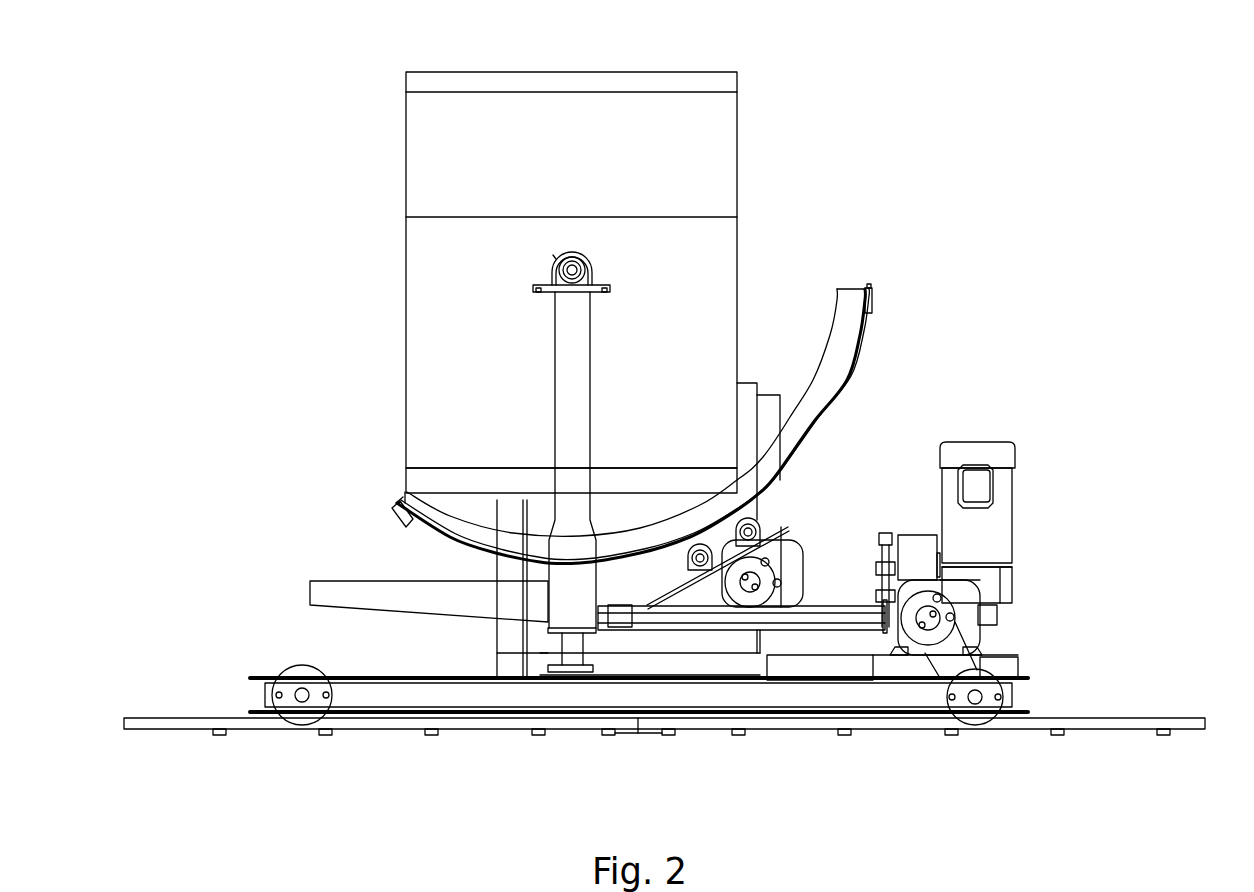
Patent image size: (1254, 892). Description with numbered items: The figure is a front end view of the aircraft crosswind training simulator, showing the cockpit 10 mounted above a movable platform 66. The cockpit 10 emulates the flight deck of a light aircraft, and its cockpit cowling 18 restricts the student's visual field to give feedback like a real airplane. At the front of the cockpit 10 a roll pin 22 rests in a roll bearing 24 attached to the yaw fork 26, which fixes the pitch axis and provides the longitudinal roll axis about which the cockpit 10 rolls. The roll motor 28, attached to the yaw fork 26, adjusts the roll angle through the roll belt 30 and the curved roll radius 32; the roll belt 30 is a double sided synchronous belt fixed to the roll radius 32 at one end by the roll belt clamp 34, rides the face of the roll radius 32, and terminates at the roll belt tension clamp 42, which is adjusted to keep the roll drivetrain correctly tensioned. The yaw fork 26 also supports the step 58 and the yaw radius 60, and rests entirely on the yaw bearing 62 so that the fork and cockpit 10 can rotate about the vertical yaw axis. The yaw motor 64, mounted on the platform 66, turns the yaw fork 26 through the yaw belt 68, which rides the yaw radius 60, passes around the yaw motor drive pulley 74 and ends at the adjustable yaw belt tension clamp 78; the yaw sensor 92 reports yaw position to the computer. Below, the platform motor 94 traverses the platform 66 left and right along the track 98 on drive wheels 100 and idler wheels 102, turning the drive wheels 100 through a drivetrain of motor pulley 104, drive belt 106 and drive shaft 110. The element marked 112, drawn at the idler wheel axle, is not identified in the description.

The cockpit 10 is at (532, 451).
The cockpit cowling 18 is at (623, 270).
The roll pins 22 is at (609, 256).
The roll bearings 24 is at (532, 259).
The yaw fork 26 is at (538, 482).
The roll motor 28 is at (801, 555).
The roll belt 30 is at (697, 563).
The roll radius 32 is at (661, 384).
The roll belt clamp 34 is at (365, 518).
The roll belt tension clamp 42 is at (915, 295).
The step 58 is at (400, 577).
The yaw radius 60 is at (779, 711).
The yaw bearing 62 is at (497, 589).
The yaw motor 64 is at (1036, 484).
The platform 66 is at (639, 662).
The yaw belt 68 is at (742, 695).
The yaw motor drive pulley 74 is at (1057, 594).
The yaw belt tension clamp 78 is at (566, 704).
The yaw sensor 92 is at (906, 554).
The platform motor 94 is at (995, 565).
The track 98 is at (669, 682).
The drive wheels 100 is at (1058, 633).
The idler wheels 102 is at (244, 668).
The motor pulley 104 is at (1035, 560).
The drive belt 106 is at (906, 703).
The drive shaft 110 is at (1014, 734).
The axle 112 is at (263, 737).